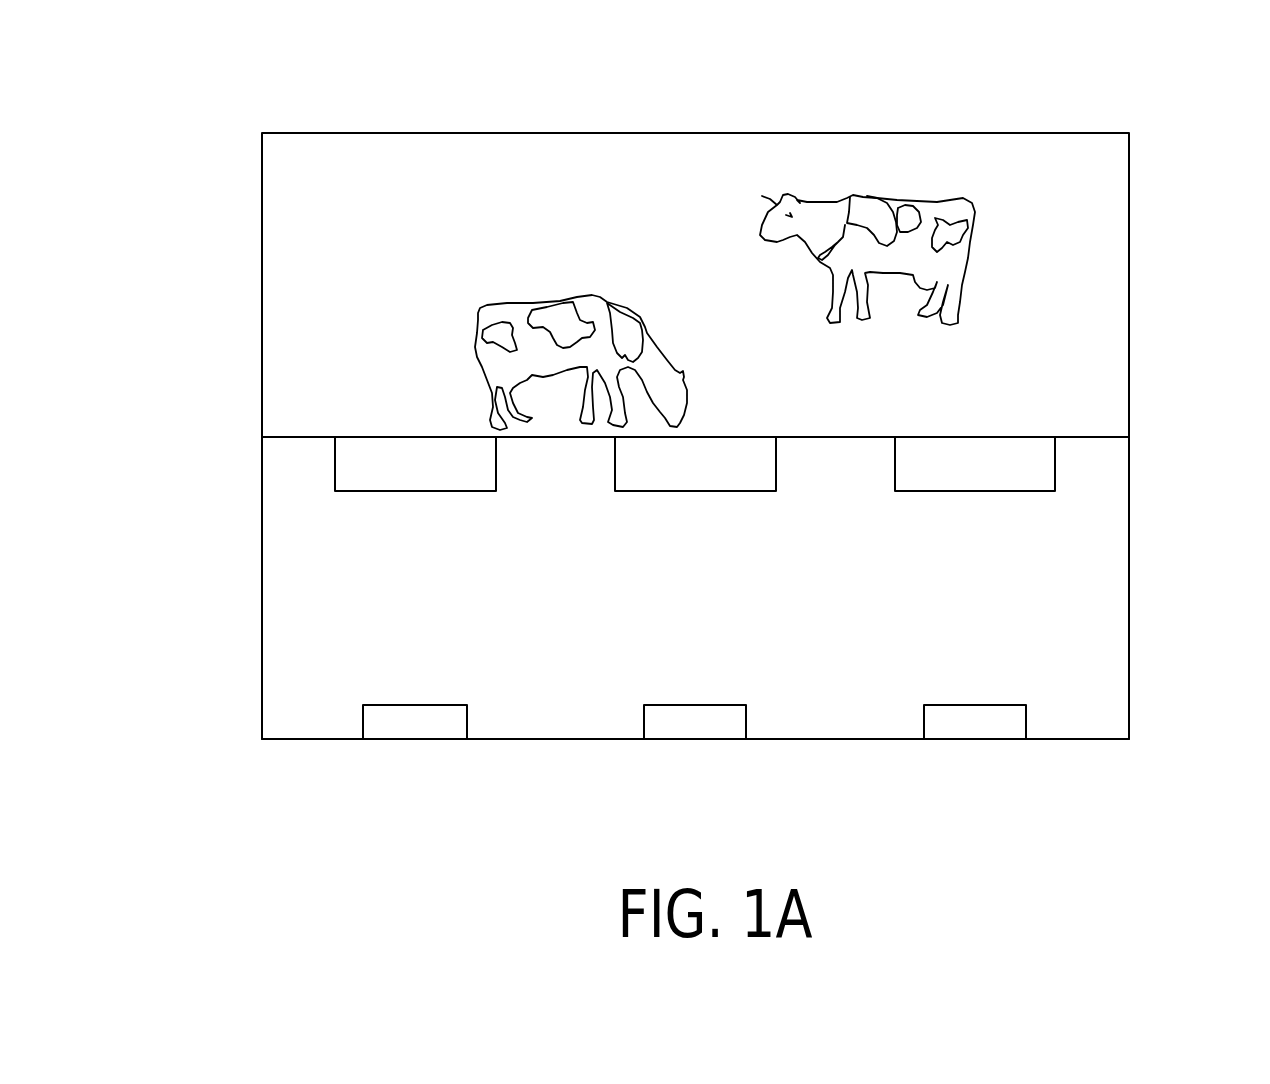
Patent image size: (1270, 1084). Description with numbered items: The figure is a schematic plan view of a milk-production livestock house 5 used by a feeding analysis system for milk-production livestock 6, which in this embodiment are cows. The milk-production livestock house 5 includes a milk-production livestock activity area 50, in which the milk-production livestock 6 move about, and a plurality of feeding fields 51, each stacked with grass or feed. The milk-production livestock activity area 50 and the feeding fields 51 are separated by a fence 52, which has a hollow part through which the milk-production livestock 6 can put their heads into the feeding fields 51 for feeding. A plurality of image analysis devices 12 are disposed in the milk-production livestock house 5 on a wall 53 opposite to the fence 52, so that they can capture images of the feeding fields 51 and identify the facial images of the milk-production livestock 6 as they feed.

The milk-production livestock house 5 is at (204, 99).
The milk-production livestock 6 is at (510, 330).
The image analysis device 12 is at (415, 728).
The milk-production livestock activity area 50 is at (1087, 221).
The feeding field 51 is at (387, 470).
The fence 52 is at (1076, 435).
The wall 53 is at (1060, 740).